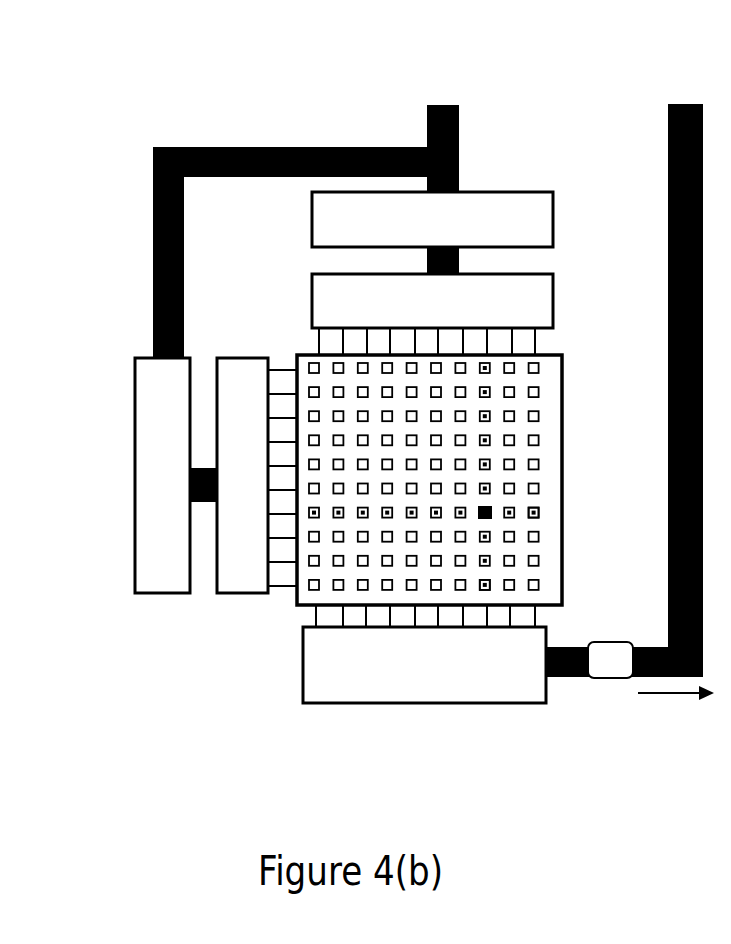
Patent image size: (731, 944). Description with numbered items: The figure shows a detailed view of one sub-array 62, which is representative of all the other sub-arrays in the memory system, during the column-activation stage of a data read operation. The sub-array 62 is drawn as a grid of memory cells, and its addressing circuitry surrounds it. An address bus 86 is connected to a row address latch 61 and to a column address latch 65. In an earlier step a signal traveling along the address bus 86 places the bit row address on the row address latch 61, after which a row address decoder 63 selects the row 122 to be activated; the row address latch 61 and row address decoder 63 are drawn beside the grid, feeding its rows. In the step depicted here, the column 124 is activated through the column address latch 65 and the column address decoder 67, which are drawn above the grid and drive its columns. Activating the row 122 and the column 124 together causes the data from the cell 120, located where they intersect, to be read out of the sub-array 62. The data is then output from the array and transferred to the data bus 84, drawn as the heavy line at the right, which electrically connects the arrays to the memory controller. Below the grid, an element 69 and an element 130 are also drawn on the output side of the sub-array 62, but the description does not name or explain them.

The address bus 86 is at (213, 146).
The data bus 84 is at (668, 148).
The column address latch 65 is at (535, 227).
The column address decoder 67 is at (537, 310).
The row address latch 61 is at (165, 576).
The row address decoder 63 is at (248, 582).
The sub-array 62 is at (568, 413).
The cell 120 is at (491, 505).
The row 122 is at (548, 512).
The column 124 is at (487, 594).
The readout circuit 69 is at (393, 670).
The output amplifier 130 is at (608, 673).